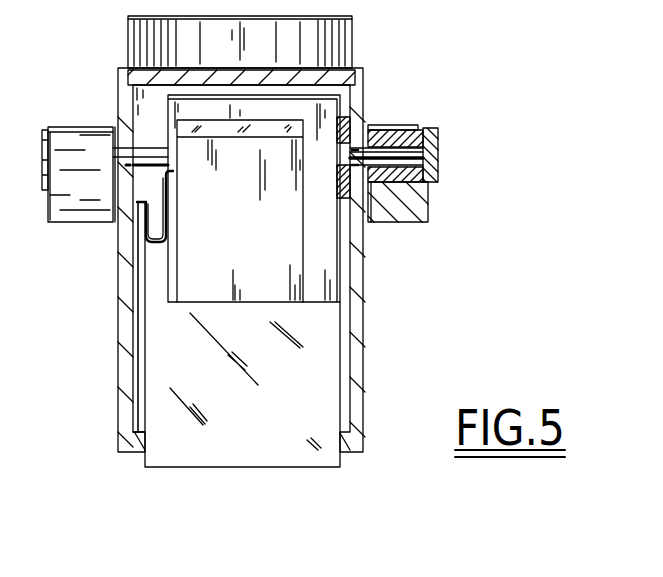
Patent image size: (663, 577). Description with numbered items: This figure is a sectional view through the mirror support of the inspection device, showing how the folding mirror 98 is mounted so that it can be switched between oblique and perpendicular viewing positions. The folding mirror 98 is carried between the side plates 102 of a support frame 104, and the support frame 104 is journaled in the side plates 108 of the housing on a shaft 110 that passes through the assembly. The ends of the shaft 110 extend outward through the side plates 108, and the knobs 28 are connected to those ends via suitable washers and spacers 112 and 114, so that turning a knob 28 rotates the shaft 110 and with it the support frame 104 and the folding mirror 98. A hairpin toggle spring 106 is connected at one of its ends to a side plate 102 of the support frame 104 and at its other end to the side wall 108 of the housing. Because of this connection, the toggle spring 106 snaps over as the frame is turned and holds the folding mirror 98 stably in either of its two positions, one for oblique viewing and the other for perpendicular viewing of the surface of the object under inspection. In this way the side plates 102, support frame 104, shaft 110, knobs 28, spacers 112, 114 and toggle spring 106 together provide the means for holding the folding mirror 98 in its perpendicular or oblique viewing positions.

The knob 28 is at (75, 218).
The folding mirror 98 is at (267, 302).
The side plate of support frame 102 is at (165, 130).
The support frame 104 is at (322, 273).
The hairpin toggle spring 106 is at (156, 248).
The side plate of housing 108 is at (118, 360).
The shaft 110 is at (420, 142).
The washer and spacer 112 is at (369, 126).
The washer and spacer 114 is at (195, 457).